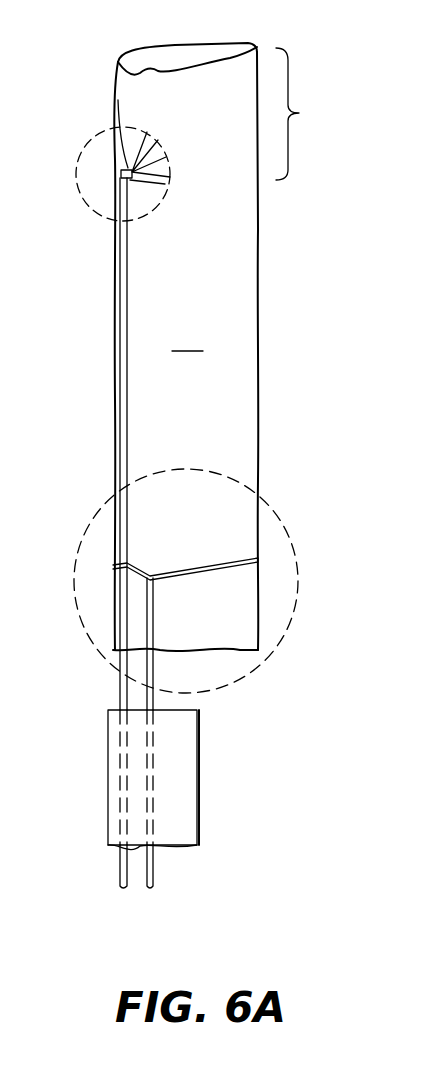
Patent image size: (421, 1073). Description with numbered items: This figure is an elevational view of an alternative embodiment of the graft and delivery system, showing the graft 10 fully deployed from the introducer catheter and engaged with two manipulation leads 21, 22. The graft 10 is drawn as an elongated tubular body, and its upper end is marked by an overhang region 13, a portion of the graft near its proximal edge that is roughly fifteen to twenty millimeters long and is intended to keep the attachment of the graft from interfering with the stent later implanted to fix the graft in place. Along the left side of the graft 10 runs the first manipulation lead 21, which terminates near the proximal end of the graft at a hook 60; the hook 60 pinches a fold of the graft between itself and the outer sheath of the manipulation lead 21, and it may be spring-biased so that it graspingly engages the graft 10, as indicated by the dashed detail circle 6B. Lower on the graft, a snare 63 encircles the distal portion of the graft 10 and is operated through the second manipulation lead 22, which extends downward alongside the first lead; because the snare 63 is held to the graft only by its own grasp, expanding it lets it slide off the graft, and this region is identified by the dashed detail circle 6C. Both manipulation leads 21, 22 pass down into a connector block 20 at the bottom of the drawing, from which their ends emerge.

The graft 10 is at (185, 347).
The overhang region 13 is at (310, 114).
The hook 60 is at (150, 140).
The manipulation lead 21 is at (132, 400).
The snare 63 is at (213, 567).
The manipulation lead 22 is at (152, 755).
The connector block 20 is at (198, 790).
The detail circle FIG. 6B is at (158, 208).
The detail circle FIG. 6C is at (266, 663).